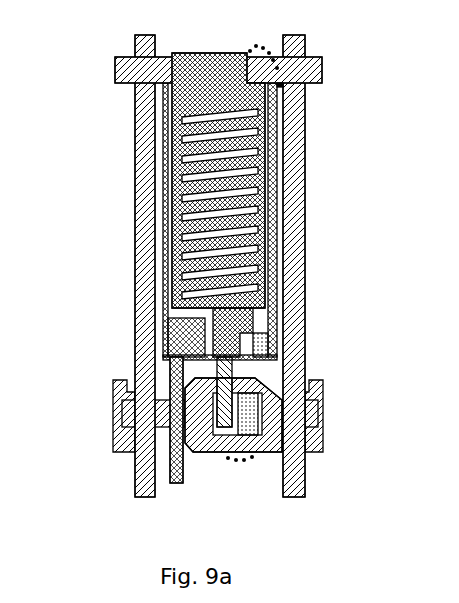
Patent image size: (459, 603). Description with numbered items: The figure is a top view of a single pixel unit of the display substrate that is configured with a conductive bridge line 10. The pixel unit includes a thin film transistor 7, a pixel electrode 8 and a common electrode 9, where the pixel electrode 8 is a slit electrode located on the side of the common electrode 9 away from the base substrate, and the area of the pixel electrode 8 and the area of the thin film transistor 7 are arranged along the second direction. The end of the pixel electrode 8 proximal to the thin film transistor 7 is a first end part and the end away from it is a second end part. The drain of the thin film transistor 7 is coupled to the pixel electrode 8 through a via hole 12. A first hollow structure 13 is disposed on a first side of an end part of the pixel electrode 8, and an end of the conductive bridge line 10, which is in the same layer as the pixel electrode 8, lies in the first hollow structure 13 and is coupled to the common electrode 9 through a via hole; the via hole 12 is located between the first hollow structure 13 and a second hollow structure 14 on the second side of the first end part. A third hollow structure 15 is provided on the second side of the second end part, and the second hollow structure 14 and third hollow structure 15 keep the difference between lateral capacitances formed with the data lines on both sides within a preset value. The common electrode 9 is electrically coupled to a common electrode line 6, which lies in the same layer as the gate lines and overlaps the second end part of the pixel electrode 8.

The common electrode line 6 is at (103, 67).
The thin film transistor 7 is at (214, 464).
The pixel electrode 8 is at (233, 97).
The common electrode 9 is at (285, 327).
The conductive bridge line 10 is at (157, 375).
The via hole 12 is at (249, 310).
The first hollow structure 13 is at (142, 341).
The second hollow structure 14 is at (275, 363).
The third hollow structure 15 is at (294, 84).